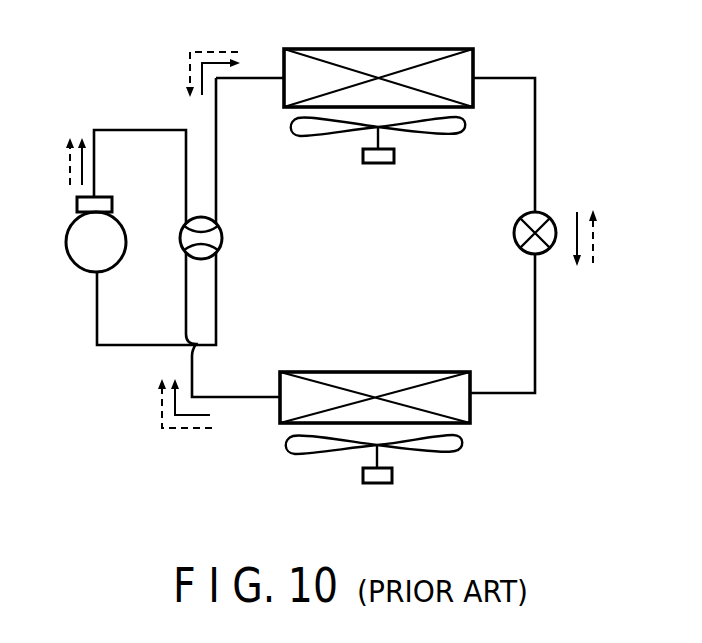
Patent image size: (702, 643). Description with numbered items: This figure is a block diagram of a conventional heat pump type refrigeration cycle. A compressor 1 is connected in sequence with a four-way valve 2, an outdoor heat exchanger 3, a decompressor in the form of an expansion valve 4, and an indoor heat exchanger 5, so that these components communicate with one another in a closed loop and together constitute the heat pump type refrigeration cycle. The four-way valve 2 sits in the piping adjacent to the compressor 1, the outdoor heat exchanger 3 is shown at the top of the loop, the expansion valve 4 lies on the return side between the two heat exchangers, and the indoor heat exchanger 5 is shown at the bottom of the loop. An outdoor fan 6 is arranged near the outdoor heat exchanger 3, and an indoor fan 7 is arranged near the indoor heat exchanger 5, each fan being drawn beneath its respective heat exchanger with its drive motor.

The compressor 1 is at (65, 242).
The 4-way valve 2 is at (222, 238).
The outdoor heat exchanger 3 is at (383, 49).
The expansion valve 4 is at (512, 233).
The indoor heat exchanger 5 is at (380, 372).
The outdoor fan 6 is at (390, 137).
The indoor fan 7 is at (390, 457).